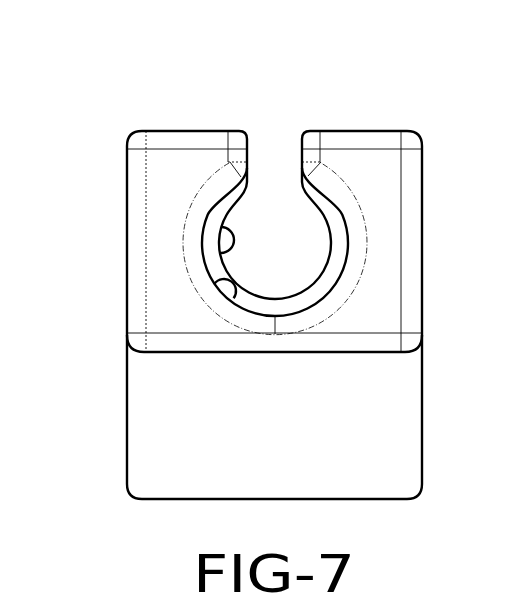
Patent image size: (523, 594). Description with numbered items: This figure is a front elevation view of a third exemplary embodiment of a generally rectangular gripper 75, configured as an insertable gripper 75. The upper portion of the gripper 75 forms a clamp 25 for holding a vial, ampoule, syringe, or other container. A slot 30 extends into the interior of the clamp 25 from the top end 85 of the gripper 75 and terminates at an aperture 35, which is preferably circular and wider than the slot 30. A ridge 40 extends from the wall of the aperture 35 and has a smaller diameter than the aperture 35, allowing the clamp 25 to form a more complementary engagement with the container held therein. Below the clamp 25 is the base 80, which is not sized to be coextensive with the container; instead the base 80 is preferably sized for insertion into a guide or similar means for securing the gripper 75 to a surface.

The gripper 75 is at (96, 153).
The slot 30 is at (262, 141).
The top end 85 is at (347, 132).
The clamp 25 is at (386, 222).
The ridge 40 is at (222, 227).
The aperture 35 is at (214, 283).
The base 80 is at (185, 403).